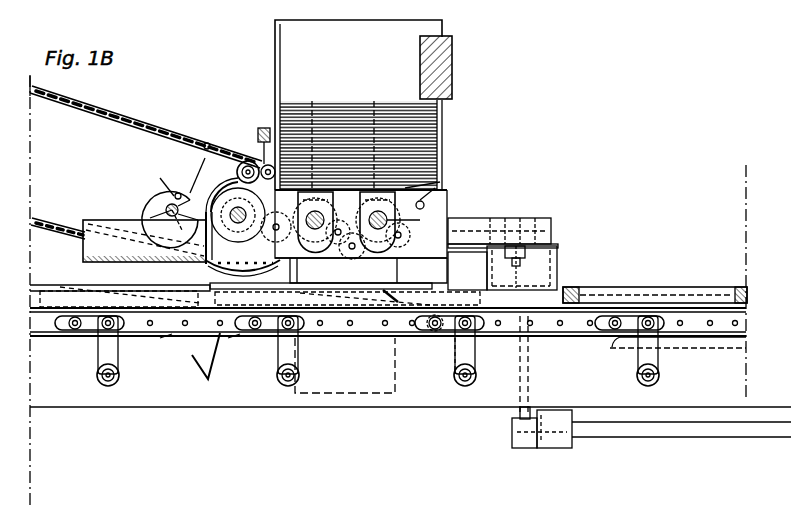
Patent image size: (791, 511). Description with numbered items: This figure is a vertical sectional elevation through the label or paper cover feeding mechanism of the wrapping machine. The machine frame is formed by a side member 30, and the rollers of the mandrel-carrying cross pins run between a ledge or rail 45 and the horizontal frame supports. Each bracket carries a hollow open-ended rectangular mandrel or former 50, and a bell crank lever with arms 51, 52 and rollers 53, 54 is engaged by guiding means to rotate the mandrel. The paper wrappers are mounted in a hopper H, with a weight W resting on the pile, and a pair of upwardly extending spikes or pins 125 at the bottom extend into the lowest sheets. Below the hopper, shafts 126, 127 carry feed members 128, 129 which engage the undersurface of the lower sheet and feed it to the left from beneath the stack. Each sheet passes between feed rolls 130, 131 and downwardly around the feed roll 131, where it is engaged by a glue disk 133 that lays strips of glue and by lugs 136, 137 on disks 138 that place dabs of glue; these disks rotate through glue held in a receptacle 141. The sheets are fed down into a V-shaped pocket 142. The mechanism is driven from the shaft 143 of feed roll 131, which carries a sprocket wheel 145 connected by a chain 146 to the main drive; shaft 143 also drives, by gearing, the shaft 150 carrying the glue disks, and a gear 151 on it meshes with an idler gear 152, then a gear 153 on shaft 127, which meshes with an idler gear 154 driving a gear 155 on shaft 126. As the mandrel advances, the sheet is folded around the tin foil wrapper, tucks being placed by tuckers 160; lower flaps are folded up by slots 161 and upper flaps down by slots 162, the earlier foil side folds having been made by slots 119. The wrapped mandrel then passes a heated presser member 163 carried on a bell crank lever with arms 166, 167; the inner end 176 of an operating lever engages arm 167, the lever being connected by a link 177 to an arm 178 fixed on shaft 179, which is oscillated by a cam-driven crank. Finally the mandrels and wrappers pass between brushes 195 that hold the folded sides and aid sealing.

The hopper H is at (282, 48).
The weight W is at (445, 58).
The side member 30 is at (82, 400).
The ledge or rail 45 is at (706, 343).
The mandrel or former 50 is at (684, 295).
The bell crank lever arm 51 is at (452, 343).
The bell crank lever arm 52 is at (455, 338).
The roller 53 is at (432, 331).
The roller 54 is at (462, 378).
The folding slot 119 is at (98, 297).
The spike or pin 125 is at (440, 184).
The shaft 126 is at (423, 209).
The shaft 127 is at (314, 229).
The feed member 128 is at (376, 112).
The feed member 129 is at (313, 112).
The feed roll 130 is at (262, 160).
The feed roll 131 is at (241, 160).
The glue disk 133 is at (144, 208).
The lug 136 is at (160, 178).
The lug 137 is at (199, 175).
The disk 138 is at (177, 192).
The glue receptacle 141 is at (97, 225).
The V-shaped pocket 142 is at (195, 360).
The shaft 143 is at (208, 262).
The sprocket wheel 145 is at (205, 143).
The chain 146 is at (95, 112).
The shaft 150 is at (150, 218).
The gear 151 is at (238, 224).
The idler gear 152 is at (265, 250).
The gear 153 is at (315, 252).
The idler gear 154 is at (350, 258).
The gear 155 is at (361, 236).
The tucker 160 is at (213, 349).
The folding slot 161 is at (330, 318).
The folding slot 162 is at (390, 300).
The presser member 163 is at (565, 285).
The bell crank lever arm 166 is at (548, 258).
The bell crank lever arm 167 is at (508, 252).
The inner end of lever 176 is at (522, 230).
The link 177 is at (520, 412).
The arm 178 is at (520, 448).
The shaft 179 is at (670, 440).
The brush 195 is at (745, 290).